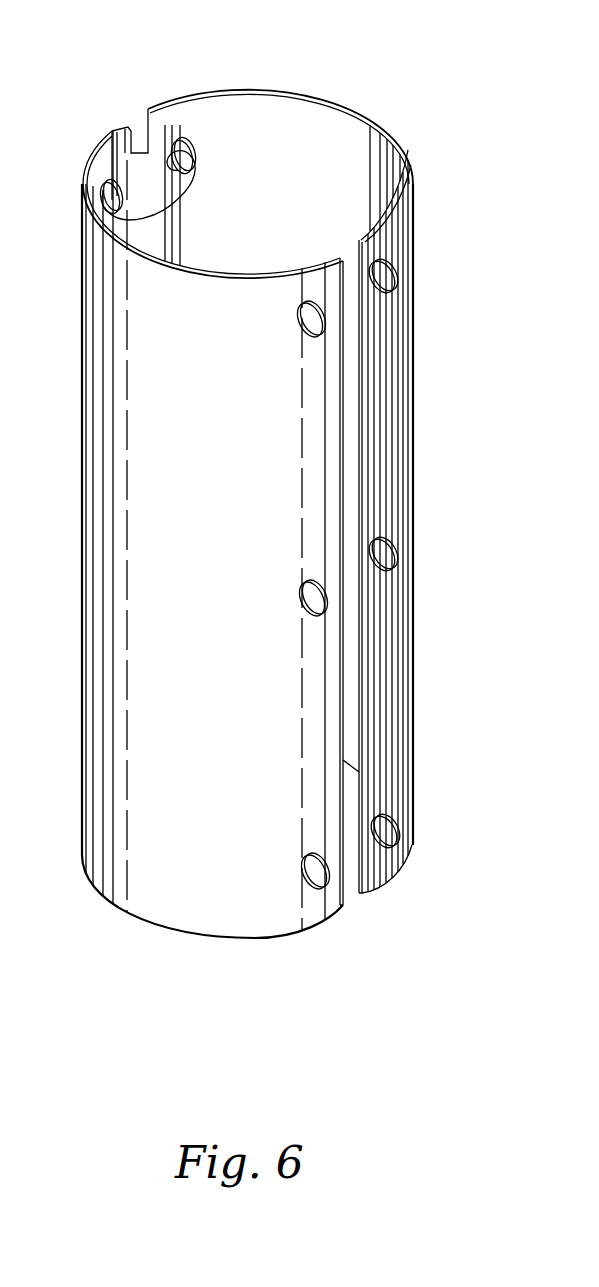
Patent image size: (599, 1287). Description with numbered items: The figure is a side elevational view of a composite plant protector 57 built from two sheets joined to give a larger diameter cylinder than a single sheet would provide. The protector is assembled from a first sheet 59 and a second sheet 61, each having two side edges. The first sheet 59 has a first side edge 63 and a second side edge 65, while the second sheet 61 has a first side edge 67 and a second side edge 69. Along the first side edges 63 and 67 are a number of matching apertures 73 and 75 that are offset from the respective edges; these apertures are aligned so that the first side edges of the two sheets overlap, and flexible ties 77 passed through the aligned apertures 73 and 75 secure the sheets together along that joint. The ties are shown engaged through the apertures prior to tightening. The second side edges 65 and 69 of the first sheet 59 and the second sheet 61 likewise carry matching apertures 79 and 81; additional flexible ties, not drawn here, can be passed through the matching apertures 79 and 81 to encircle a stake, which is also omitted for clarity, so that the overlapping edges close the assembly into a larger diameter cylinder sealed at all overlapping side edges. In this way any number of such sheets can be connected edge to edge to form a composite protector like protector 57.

The composite plant protector 57 is at (455, 98).
The first sheet 59 is at (96, 190).
The second sheet 61 is at (410, 425).
The first side edge 63 is at (347, 250).
The second side edge 65 is at (350, 905).
The first side edge 67 is at (342, 312).
The second side edge 69 is at (358, 898).
The matching apertures 73 is at (113, 190).
The matching apertures 75 is at (184, 145).
The flexible ties 77 is at (142, 228).
The matching apertures 79 is at (303, 598).
The matching apertures 81 is at (390, 548).